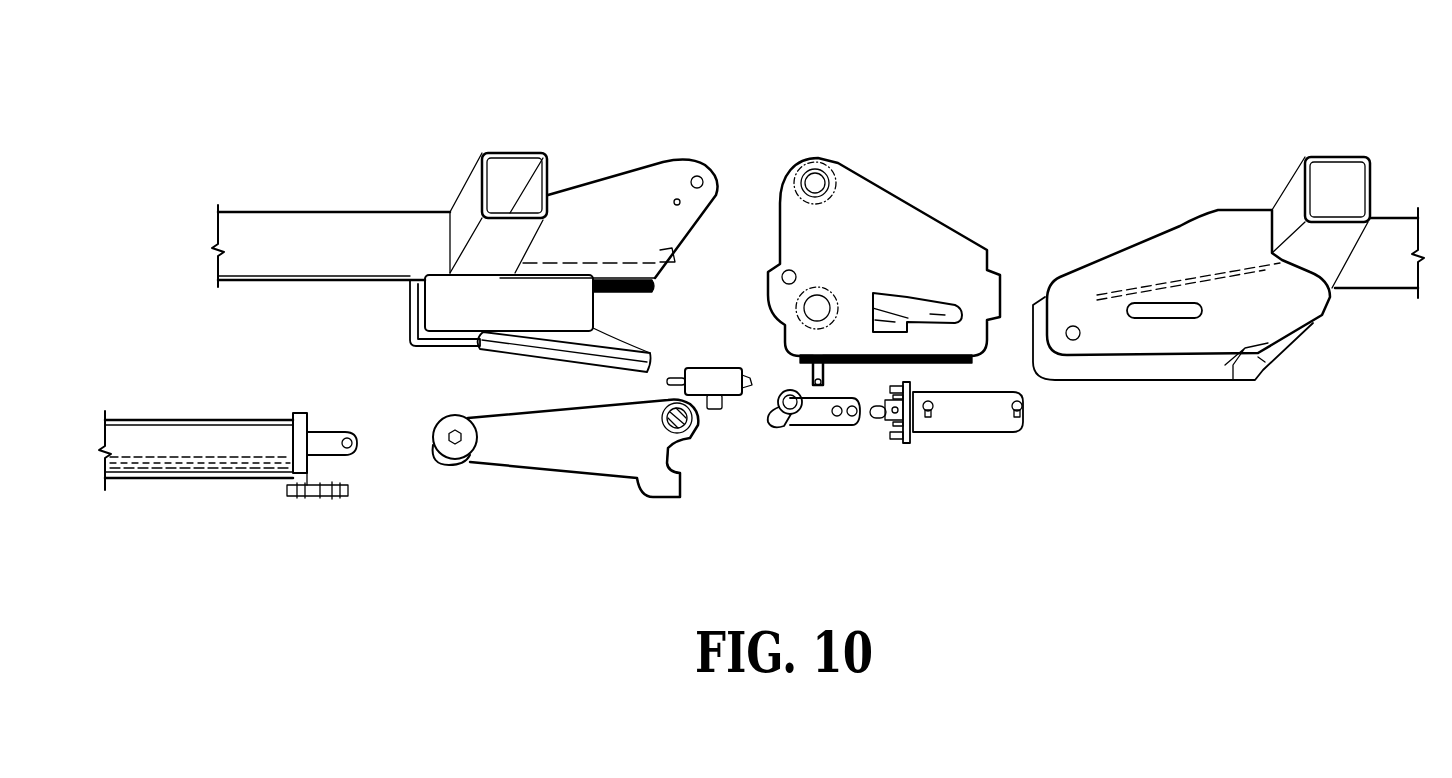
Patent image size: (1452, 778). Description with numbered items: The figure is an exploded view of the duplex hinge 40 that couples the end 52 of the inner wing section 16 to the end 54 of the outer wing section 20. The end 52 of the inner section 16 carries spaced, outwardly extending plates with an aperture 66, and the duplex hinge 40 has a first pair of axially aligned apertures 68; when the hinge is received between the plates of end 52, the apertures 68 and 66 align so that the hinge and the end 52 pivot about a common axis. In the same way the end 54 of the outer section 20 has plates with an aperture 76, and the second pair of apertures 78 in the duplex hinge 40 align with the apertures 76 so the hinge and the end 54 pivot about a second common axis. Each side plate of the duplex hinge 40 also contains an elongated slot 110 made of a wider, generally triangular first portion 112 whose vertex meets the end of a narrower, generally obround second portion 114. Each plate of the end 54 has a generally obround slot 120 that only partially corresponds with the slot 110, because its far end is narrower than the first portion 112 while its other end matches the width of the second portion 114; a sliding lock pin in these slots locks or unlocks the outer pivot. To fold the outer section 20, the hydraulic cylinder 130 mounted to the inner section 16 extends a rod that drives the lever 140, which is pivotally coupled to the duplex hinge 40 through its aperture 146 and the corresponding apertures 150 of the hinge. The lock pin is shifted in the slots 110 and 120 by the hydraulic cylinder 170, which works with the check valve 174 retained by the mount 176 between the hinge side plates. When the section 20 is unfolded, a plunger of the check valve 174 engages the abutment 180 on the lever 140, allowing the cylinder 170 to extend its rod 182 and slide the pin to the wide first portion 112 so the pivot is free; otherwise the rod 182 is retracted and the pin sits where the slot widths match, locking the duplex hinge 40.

The inner wing section 16 is at (270, 232).
The outer wing section 20 is at (1380, 237).
The duplex hinge 40 is at (900, 250).
The end of inner wing section 52 is at (595, 215).
The end of outer wing section 54 is at (1193, 250).
The aperture 66 is at (694, 176).
The first pair of apertures 68 is at (818, 185).
The aperture 76 is at (1080, 337).
The second pair of apertures 78 is at (810, 312).
The elongated slot 110 is at (913, 303).
The first portion of slot 112 is at (887, 323).
The second portion of slot 114 is at (937, 316).
The slot 120 is at (1167, 312).
The hydraulic cylinder 130 is at (227, 453).
The lever 140 is at (557, 450).
The aperture of lever 146 is at (683, 427).
The apertures 150 is at (783, 273).
The hydraulic cylinder 170 is at (1002, 423).
The check valve 174 is at (727, 385).
The mount 176 is at (677, 378).
The abutment 180 is at (663, 487).
The rod 182 is at (812, 413).